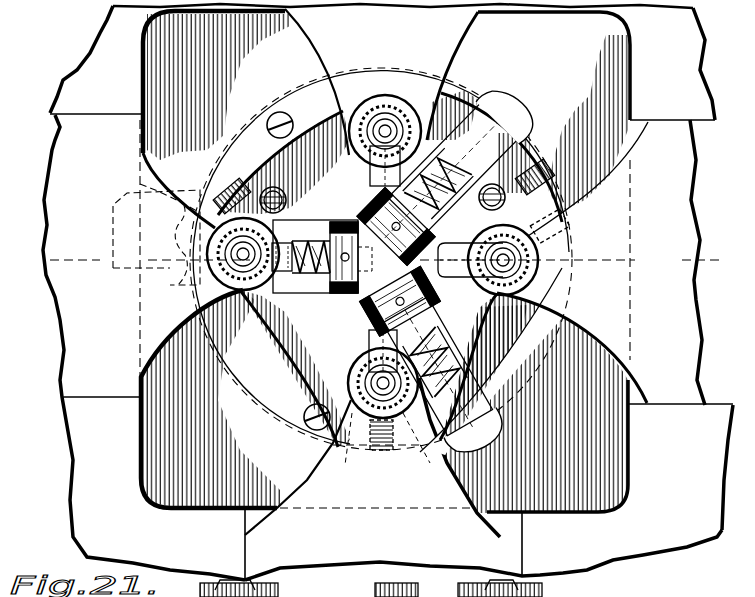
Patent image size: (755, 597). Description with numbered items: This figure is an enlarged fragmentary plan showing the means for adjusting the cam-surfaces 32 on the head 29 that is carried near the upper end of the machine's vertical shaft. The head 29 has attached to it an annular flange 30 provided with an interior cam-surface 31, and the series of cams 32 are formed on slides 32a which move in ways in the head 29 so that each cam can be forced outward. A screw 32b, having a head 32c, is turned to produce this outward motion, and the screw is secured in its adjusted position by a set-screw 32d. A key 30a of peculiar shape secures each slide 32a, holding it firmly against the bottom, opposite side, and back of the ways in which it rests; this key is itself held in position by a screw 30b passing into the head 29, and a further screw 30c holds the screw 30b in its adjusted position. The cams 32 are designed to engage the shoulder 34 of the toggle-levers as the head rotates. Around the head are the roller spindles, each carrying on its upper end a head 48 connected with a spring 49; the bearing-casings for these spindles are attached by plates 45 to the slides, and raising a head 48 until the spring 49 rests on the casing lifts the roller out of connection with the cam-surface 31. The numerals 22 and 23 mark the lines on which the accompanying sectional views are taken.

The plates 45 is at (388, 292).
The fast and loose pulleys 22 is at (385, 260).
The shipper 23 is at (305, 314).
The shoulder 34 is at (141, 184).
The annular flange 30 is at (270, 398).
The key 30a is at (320, 219).
The screw 30b is at (292, 205).
The screw 30c is at (372, 327).
The interior cam-surface 31 is at (495, 368).
The head 48 is at (385, 108).
The spring 49 is at (376, 357).
The head 29 is at (301, 284).
The cams 32 is at (532, 108).
The slides 32a is at (441, 180).
The screw 32b is at (365, 257).
The head 32c is at (418, 296).
The set-screw 32d is at (420, 202).